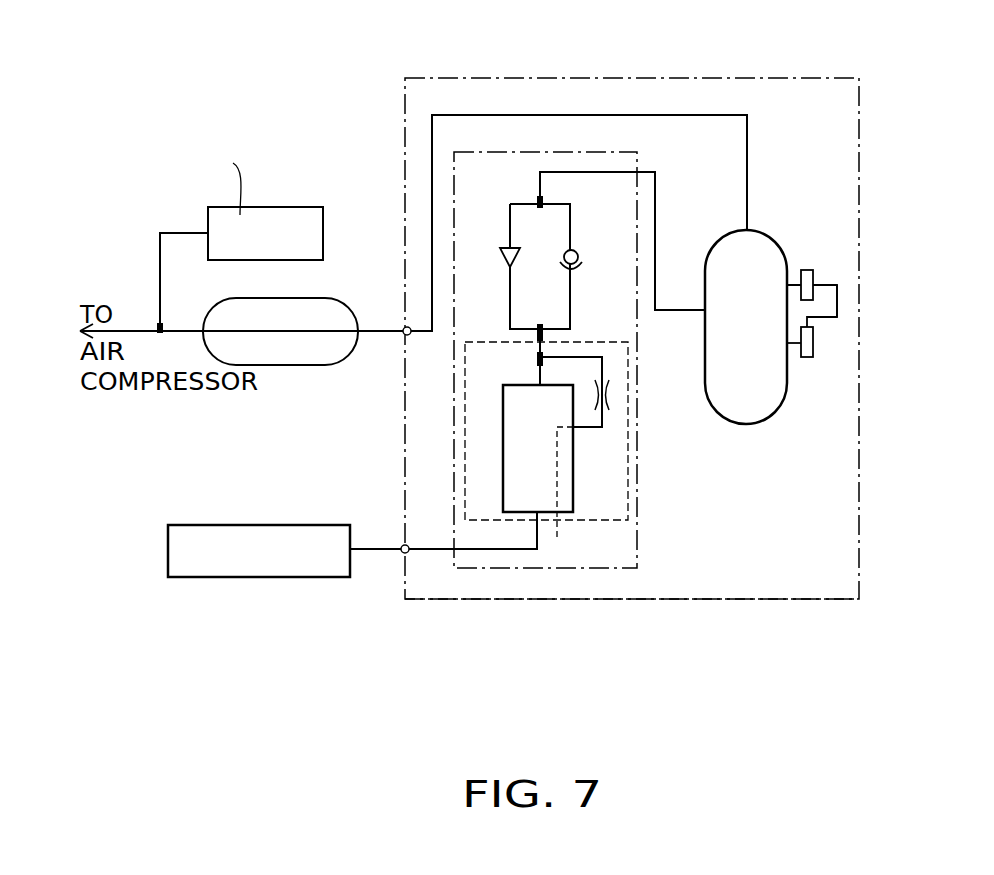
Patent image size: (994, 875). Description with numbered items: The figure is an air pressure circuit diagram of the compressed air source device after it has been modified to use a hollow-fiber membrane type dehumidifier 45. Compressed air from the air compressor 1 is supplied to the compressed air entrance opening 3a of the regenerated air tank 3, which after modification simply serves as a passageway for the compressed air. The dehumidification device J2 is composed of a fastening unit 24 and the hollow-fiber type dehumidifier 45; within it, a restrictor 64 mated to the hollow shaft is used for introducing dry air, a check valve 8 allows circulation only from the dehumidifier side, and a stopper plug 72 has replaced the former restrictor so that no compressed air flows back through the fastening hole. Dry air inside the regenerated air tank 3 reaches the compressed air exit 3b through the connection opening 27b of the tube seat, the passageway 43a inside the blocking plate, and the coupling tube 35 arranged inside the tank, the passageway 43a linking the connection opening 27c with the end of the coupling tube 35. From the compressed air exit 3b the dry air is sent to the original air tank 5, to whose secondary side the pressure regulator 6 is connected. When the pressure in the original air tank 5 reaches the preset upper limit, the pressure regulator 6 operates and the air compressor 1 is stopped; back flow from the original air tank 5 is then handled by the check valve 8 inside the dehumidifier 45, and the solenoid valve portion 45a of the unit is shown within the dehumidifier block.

The air compressor 1 is at (217, 577).
The regenerated air tank 3 is at (718, 418).
The compressed air entrance opening 3a is at (401, 553).
The compressed air exit 3b is at (405, 327).
The original air tank 5 is at (305, 365).
The pressure regulator 6 is at (270, 207).
The check valve 8 is at (574, 250).
The fastening unit 24 is at (795, 156).
The connection opening 27b is at (803, 360).
The connection opening 27c is at (810, 270).
The coupling tube 35 is at (698, 115).
The passageway 43a is at (848, 340).
The hollow-fiber type dehumidifier 45 is at (637, 537).
The solenoid valve 45a is at (463, 477).
The restrictor 64 is at (608, 392).
The stopper plug 72 is at (500, 248).
The dehumidification device J2 is at (610, 600).